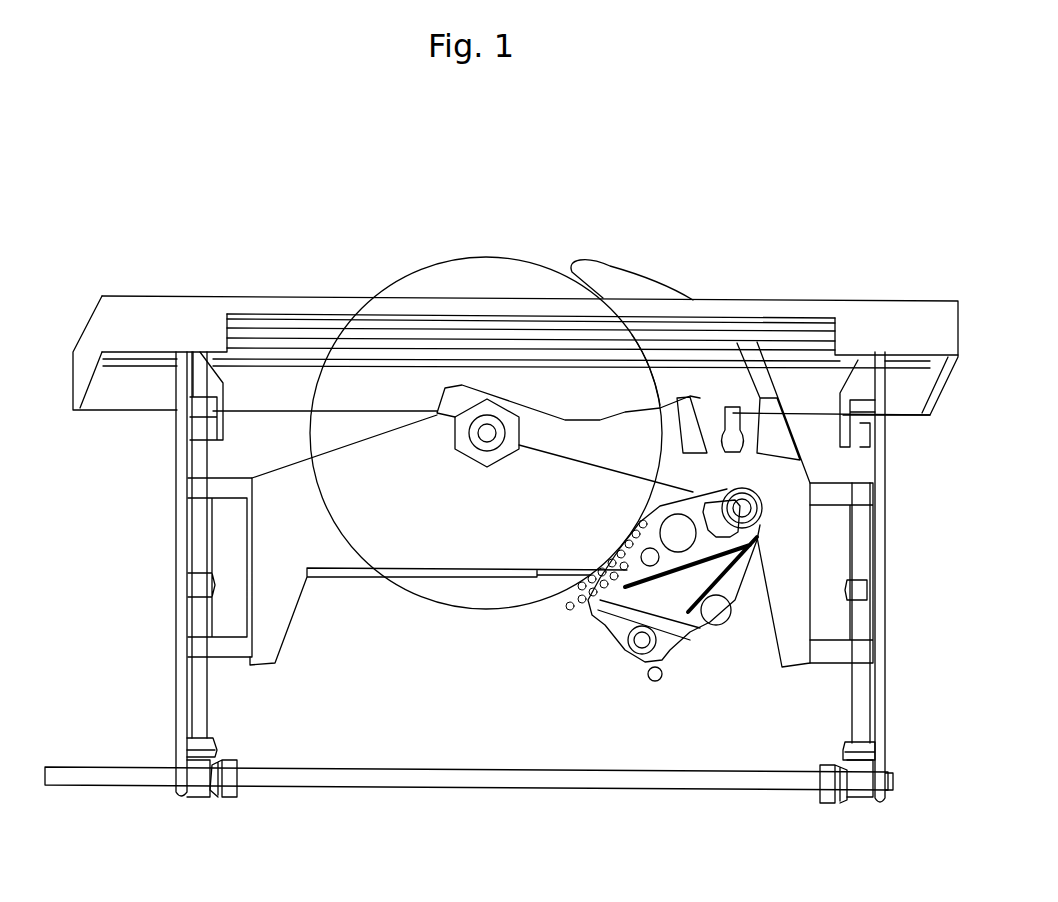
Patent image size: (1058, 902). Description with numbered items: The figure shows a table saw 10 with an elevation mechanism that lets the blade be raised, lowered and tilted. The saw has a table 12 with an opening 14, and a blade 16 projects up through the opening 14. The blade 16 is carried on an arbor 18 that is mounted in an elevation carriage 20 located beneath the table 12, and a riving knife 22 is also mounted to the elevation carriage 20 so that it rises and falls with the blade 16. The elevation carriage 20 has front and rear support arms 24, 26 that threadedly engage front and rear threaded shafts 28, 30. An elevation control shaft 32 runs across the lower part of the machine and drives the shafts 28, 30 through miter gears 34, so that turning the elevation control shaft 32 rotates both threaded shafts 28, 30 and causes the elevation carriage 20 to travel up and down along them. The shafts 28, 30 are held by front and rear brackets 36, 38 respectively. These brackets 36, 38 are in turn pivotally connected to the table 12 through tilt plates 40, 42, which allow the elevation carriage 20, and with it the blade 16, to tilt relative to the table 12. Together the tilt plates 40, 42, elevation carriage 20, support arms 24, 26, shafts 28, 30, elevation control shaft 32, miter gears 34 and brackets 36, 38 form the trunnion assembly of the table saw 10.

The table saw 10 is at (624, 210).
The table 12 is at (835, 302).
The opening 14 is at (338, 322).
The blade 16 is at (462, 260).
The arbor 18 is at (487, 442).
The elevation carriage 20 is at (352, 598).
The riving knife 22 is at (667, 260).
The front support arm 24 is at (230, 635).
The rear support arm 26 is at (830, 640).
The front threaded shaft 28 is at (208, 712).
The rear threaded shaft 30 is at (852, 690).
The elevation control shaft 32 is at (483, 788).
The miter gears 34 is at (232, 812).
The front bracket 36 is at (173, 718).
The rear bracket 38 is at (885, 717).
The tilt plate 40 is at (193, 383).
The tilt plate 42 is at (880, 378).